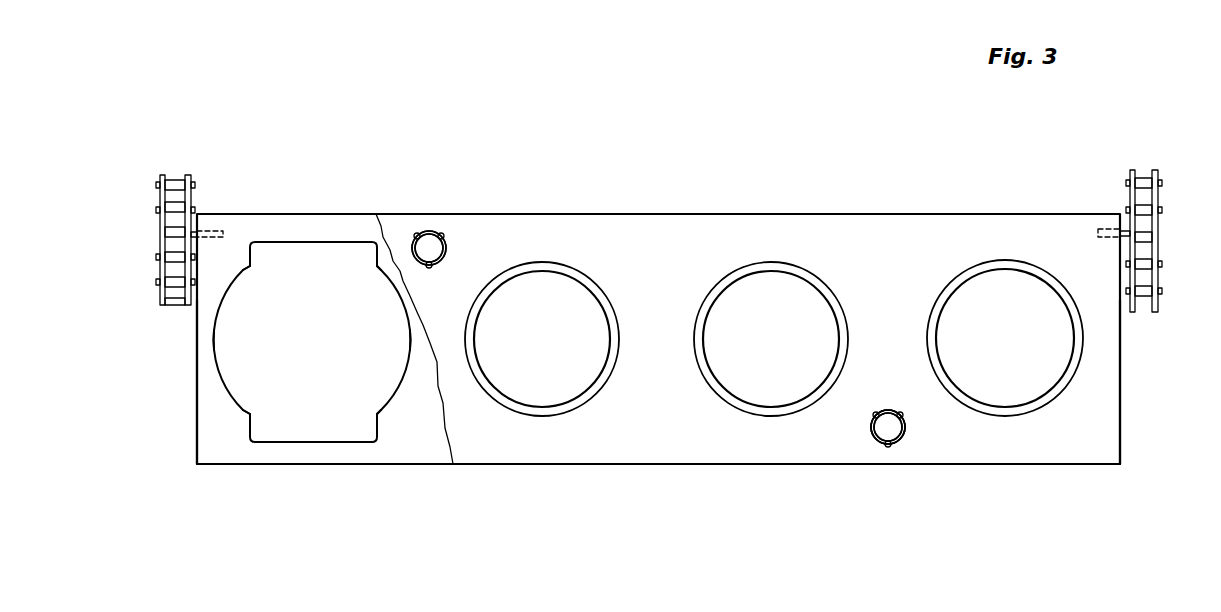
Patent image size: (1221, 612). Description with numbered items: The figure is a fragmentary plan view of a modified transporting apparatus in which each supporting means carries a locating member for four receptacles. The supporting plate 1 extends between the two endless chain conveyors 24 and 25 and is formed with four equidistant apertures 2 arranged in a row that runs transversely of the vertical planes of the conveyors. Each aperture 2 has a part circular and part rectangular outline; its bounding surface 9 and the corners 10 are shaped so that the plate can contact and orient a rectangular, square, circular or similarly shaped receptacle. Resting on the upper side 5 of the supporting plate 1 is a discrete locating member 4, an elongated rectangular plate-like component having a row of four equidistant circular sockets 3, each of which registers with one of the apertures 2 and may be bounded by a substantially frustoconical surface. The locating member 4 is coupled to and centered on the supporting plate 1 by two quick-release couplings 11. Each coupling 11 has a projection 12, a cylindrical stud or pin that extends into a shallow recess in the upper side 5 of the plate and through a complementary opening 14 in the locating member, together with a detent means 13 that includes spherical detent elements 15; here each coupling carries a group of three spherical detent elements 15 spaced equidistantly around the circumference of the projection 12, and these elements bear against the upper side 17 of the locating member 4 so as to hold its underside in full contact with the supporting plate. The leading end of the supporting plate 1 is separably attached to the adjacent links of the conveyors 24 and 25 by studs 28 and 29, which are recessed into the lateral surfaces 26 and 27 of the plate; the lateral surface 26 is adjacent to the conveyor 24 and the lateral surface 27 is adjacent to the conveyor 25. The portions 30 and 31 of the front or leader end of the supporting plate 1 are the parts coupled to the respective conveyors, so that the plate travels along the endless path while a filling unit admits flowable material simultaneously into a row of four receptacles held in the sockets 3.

The supporting plate 1 is at (368, 452).
The aperture 2 is at (300, 433).
The socket 3 is at (573, 303).
The locating member 4 is at (1005, 448).
The upper side 5 is at (420, 446).
The surface bounding the aperture 9 is at (215, 338).
The corners 10 is at (256, 249).
The quick-release coupling 11 is at (873, 437).
The projection 12 is at (432, 244).
The detent means 13 is at (447, 248).
The opening 14 is at (441, 259).
The spherical detent element 15 is at (414, 236).
The upper side of the locating member 17 is at (678, 263).
The chain conveyor 24 is at (174, 182).
The chain conveyor 25 is at (1145, 178).
The lateral surface 26 is at (197, 413).
The lateral surface 27 is at (1121, 411).
The stud 28 is at (195, 228).
The stud 29 is at (1125, 232).
The front end portion 30 is at (198, 258).
The front end portion 31 is at (1118, 258).